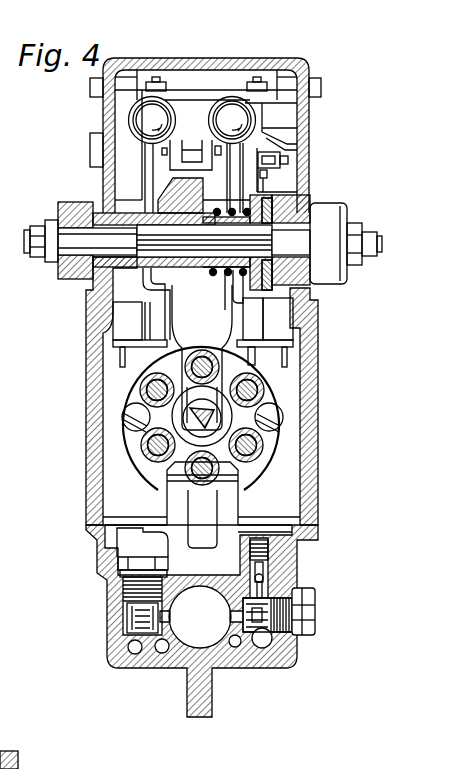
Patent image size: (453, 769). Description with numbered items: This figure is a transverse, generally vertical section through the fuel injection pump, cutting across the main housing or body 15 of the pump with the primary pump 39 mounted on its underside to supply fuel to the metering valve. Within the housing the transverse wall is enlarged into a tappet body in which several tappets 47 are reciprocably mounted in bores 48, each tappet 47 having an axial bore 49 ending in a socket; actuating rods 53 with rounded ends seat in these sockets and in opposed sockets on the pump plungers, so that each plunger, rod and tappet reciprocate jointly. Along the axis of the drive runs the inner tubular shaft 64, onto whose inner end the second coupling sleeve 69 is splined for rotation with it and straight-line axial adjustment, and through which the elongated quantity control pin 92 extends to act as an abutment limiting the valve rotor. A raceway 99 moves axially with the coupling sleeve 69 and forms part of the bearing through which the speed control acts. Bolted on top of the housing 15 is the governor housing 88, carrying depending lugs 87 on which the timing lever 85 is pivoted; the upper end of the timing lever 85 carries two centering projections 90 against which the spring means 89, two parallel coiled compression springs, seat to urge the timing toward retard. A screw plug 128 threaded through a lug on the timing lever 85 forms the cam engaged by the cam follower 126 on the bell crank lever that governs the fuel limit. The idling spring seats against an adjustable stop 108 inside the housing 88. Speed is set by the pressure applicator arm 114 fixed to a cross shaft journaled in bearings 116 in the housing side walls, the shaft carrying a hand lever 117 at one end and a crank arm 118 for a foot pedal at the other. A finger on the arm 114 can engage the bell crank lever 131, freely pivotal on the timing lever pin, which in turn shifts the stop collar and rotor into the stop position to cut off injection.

The main housing 15 is at (318, 448).
The primary pump 39 is at (185, 645).
The tappet 47 is at (188, 472).
The bore 48 is at (233, 456).
The axial bore 49 is at (202, 482).
The actuating rod 53 is at (160, 468).
The inner tubular shaft 64 is at (212, 420).
The second coupling sleeve 69 is at (217, 440).
The timing lever 85 is at (227, 320).
The depending lug 87 is at (124, 333).
The governor housing 88 is at (298, 134).
The spring means 89 is at (163, 99).
The centering projection 90 is at (225, 113).
The quantity control pin 92 is at (195, 418).
The raceway 99 is at (218, 442).
The adjustable stop 108 is at (264, 158).
The arm 114 is at (197, 202).
The bearing 116 is at (308, 203).
The lever 117 is at (59, 207).
The crank arm 118 is at (335, 216).
The cam follower 126 is at (170, 152).
The screw plug 128 is at (198, 96).
The bell crank lever 131 is at (150, 300).